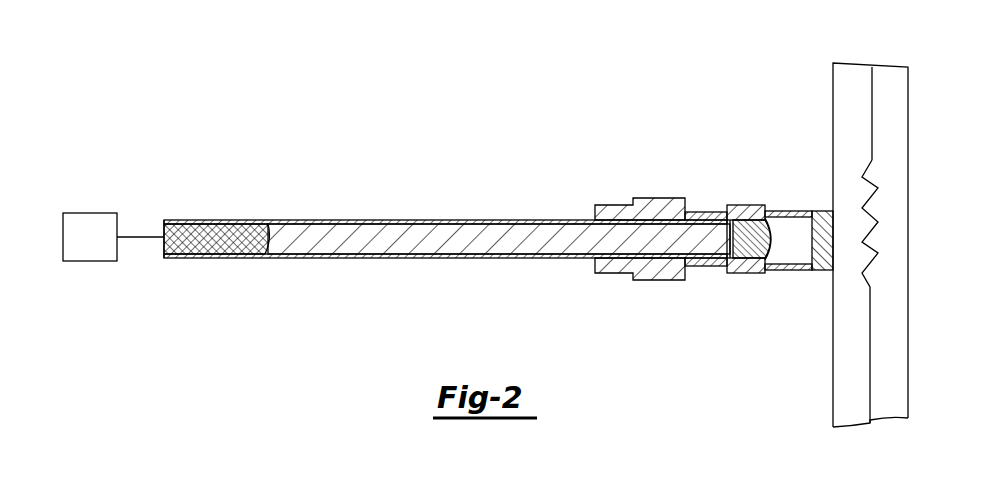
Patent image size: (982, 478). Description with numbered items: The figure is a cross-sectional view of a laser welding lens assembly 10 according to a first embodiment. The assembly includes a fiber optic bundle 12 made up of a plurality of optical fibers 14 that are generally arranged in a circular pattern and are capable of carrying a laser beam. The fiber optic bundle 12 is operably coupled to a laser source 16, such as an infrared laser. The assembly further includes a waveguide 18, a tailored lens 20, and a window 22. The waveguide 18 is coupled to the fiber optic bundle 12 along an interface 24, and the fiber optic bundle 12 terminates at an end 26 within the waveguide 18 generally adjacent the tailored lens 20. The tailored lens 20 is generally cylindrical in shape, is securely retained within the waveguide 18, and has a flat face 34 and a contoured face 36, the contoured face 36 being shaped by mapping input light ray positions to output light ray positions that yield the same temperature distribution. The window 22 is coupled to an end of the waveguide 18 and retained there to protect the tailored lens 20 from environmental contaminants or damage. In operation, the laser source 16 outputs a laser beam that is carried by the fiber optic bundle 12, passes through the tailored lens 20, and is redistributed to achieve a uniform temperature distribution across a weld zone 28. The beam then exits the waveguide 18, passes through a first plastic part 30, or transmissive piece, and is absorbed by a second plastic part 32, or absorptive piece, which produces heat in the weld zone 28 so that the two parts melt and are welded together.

The laser welding lens assembly 10 is at (466, 152).
The fiber optic bundle 12 is at (375, 220).
The optical fibers 14 is at (200, 247).
The laser source 16 is at (82, 213).
The waveguide 18 is at (650, 278).
The tailored lens 20 is at (743, 253).
The window 22 is at (820, 258).
The interface 24 is at (655, 221).
The end 26 is at (705, 247).
The weld zone 28 is at (873, 195).
The first plastic part 30 is at (845, 97).
The second plastic part 32 is at (886, 75).
The flat face 34 is at (725, 228).
The contoured face 36 is at (768, 238).